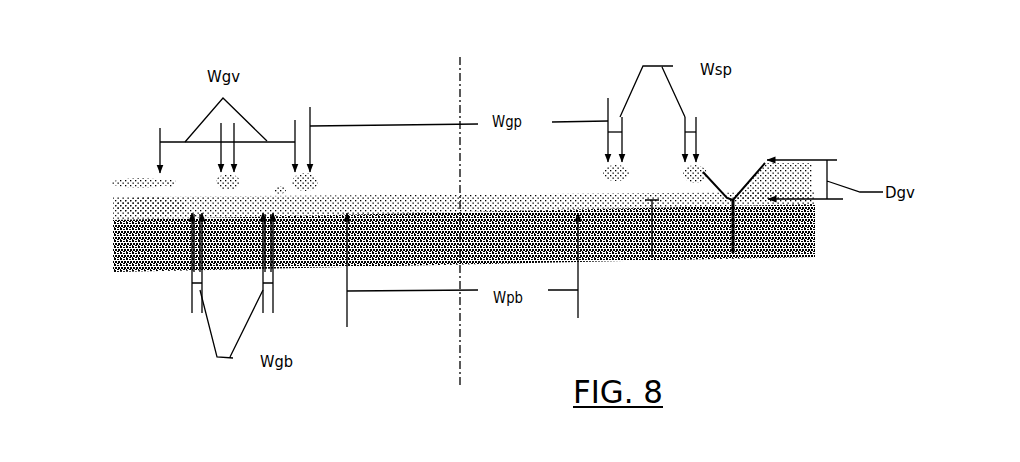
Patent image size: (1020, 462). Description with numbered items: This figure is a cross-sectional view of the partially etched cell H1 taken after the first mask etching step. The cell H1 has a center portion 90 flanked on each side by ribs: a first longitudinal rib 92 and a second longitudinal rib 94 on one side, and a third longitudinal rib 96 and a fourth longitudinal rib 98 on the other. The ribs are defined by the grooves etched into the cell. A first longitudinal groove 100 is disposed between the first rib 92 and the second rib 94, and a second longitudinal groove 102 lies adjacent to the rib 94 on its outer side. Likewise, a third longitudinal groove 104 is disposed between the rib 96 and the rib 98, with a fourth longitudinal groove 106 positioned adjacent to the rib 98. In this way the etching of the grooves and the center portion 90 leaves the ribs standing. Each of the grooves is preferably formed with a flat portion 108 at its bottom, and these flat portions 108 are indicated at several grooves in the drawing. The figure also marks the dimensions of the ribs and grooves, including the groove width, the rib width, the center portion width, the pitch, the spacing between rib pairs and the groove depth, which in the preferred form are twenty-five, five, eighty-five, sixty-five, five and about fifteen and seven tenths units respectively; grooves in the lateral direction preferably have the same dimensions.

The center portion 90 is at (412, 173).
The first longitudinal rib 92 is at (313, 192).
The second longitudinal rib 94 is at (230, 190).
The third longitudinal rib 96 is at (597, 170).
The fourth longitudinal rib 98 is at (703, 172).
The first longitudinal groove 100 is at (278, 185).
The second longitudinal groove 102 is at (190, 185).
The third longitudinal groove 104 is at (645, 182).
The fourth longitudinal groove 106 is at (740, 163).
The flat portion 108 is at (194, 217).
The partially etched cell H1 is at (120, 240).